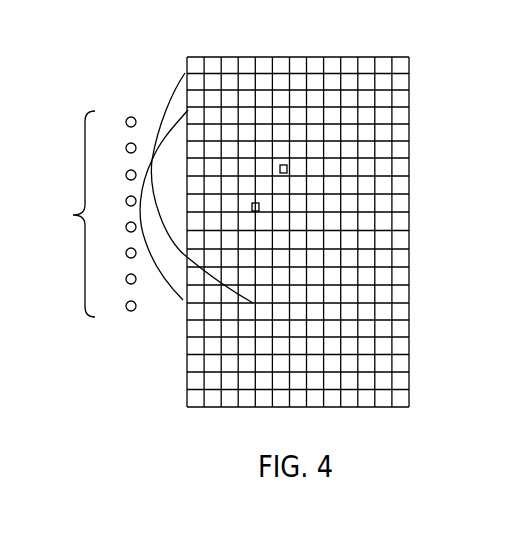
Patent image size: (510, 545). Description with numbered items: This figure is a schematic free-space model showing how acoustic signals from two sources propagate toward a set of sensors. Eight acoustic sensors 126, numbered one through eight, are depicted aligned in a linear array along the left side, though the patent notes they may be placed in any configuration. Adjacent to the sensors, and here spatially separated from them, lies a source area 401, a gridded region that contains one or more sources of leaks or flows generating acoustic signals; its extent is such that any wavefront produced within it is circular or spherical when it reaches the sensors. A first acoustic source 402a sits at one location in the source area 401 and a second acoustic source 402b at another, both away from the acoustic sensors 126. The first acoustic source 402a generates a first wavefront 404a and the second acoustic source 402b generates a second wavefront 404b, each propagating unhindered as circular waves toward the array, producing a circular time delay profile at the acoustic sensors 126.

The source area 401 is at (431, 65).
The first acoustic source 402a is at (287, 168).
The second acoustic source 402b is at (259, 205).
The first wavefront 404a is at (167, 103).
The second wavefront 404b is at (173, 297).
The acoustic sensors 126 is at (79, 144).